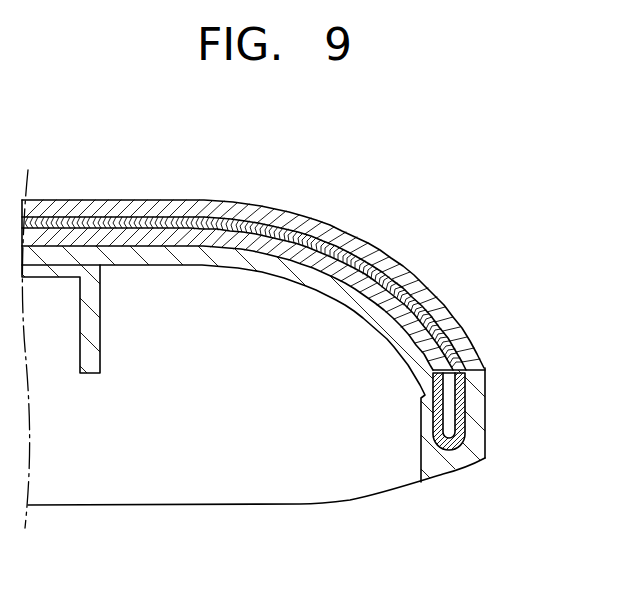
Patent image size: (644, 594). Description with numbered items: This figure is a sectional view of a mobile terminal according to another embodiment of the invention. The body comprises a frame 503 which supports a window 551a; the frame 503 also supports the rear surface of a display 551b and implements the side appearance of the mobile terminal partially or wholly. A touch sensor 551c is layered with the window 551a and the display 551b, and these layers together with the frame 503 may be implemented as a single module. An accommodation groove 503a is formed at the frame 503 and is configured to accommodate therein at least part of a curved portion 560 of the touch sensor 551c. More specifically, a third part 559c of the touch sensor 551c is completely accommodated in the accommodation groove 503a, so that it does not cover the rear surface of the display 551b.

The touch sensor 551c is at (197, 215).
The window 551a is at (326, 230).
The display 551b is at (380, 266).
The frame 503 is at (474, 427).
The accommodation groove 503a is at (485, 462).
The third part 559c is at (435, 413).
The curved portion 560 is at (448, 446).